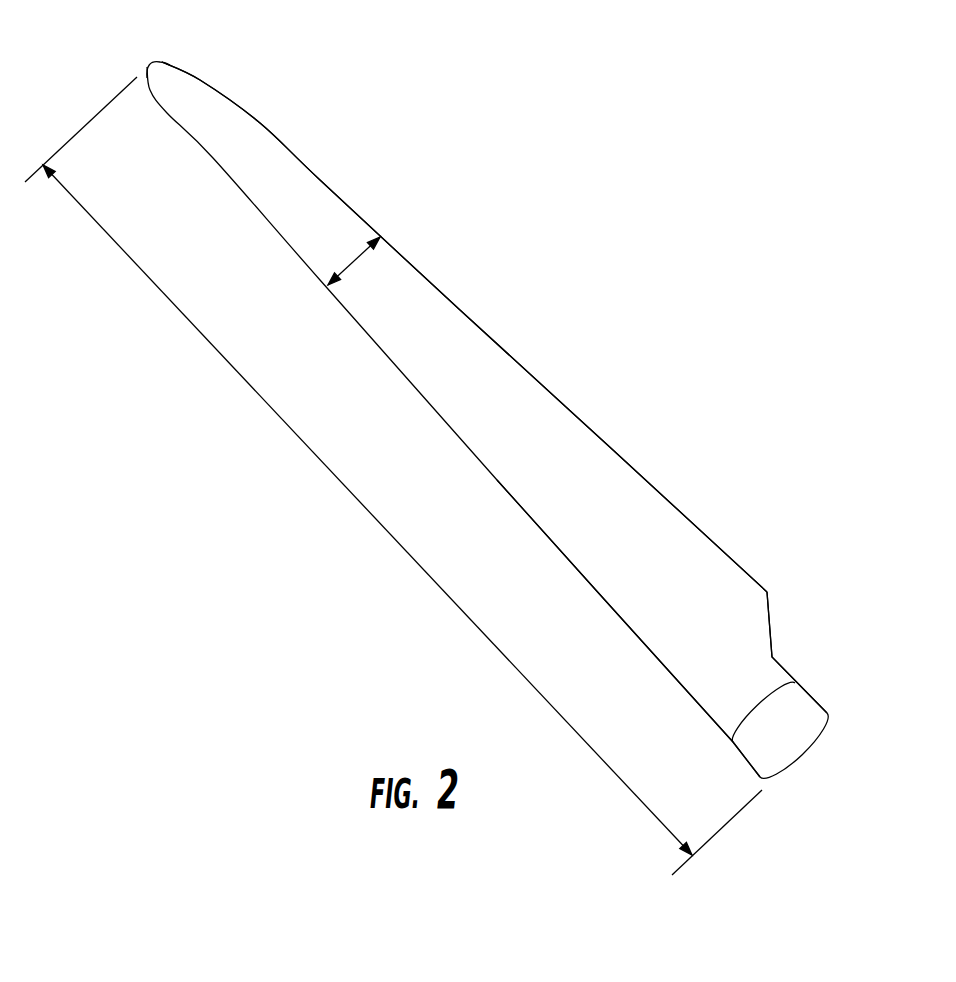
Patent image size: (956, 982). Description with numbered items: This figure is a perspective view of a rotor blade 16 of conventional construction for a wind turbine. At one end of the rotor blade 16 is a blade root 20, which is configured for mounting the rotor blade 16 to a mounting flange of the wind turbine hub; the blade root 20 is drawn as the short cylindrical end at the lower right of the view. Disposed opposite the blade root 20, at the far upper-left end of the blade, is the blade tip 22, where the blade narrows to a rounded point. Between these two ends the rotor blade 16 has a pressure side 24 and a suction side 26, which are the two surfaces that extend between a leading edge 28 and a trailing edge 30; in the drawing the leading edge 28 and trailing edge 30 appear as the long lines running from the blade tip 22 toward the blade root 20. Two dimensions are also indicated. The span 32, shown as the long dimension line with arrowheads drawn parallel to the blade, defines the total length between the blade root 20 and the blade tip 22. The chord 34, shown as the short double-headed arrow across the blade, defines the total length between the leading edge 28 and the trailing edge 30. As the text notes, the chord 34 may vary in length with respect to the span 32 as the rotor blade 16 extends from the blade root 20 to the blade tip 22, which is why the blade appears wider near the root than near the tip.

The rotor blade 16 is at (682, 265).
The blade root 20 is at (777, 717).
The blade tip 22 is at (150, 61).
The pressure side 24 is at (592, 535).
The suction side 26 is at (517, 385).
The leading edge 28 is at (400, 372).
The trailing edge 30 is at (332, 188).
The span 32 is at (258, 395).
The chord 34 is at (353, 261).